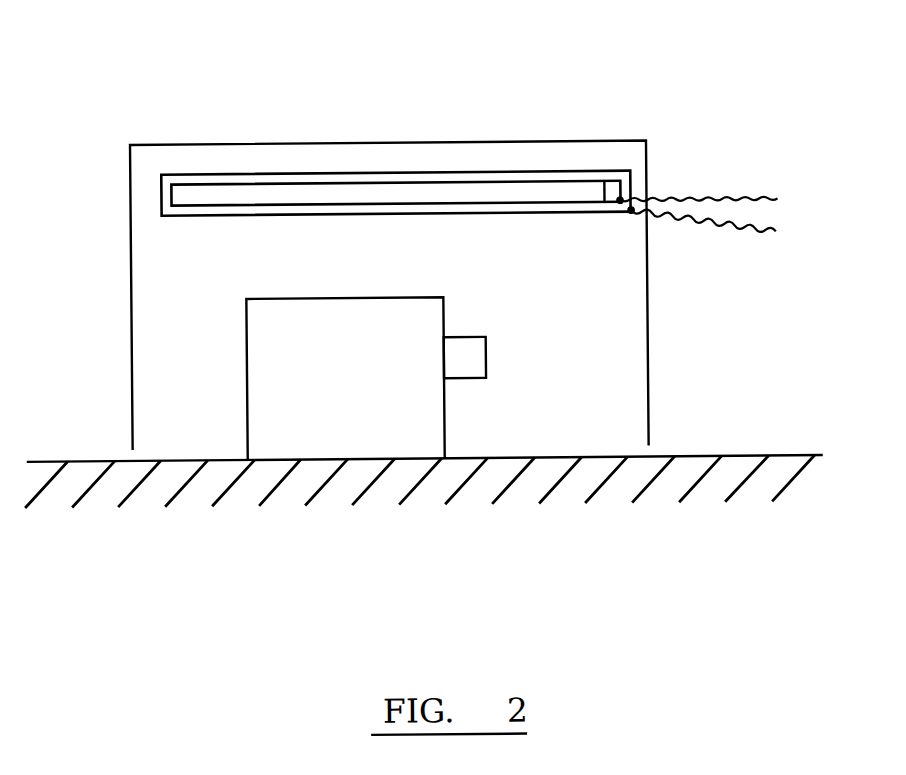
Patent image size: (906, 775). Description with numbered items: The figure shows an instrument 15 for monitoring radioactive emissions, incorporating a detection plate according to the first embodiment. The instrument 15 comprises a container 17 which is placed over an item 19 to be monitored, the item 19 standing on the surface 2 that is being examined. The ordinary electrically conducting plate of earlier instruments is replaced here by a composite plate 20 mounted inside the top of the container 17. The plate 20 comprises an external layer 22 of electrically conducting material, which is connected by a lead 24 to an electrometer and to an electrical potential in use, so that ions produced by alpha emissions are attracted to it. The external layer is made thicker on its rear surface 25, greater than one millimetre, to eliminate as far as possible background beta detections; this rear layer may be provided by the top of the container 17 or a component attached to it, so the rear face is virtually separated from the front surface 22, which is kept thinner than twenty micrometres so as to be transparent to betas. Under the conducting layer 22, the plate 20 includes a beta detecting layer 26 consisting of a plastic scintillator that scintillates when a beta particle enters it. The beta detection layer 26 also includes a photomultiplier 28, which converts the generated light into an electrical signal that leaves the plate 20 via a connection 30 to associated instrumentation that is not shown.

The surface 2 is at (162, 547).
The instrument 15 is at (453, 317).
The container 17 is at (646, 358).
The item 19 is at (352, 419).
The composite plate 20 is at (447, 181).
The external layer of electrically conducting material 22 is at (630, 176).
The lead 24 is at (728, 230).
The rear surface 25 is at (447, 181).
The beta detecting layer 26 is at (212, 194).
The photomultiplier 28 is at (616, 197).
The connection 30 is at (728, 203).